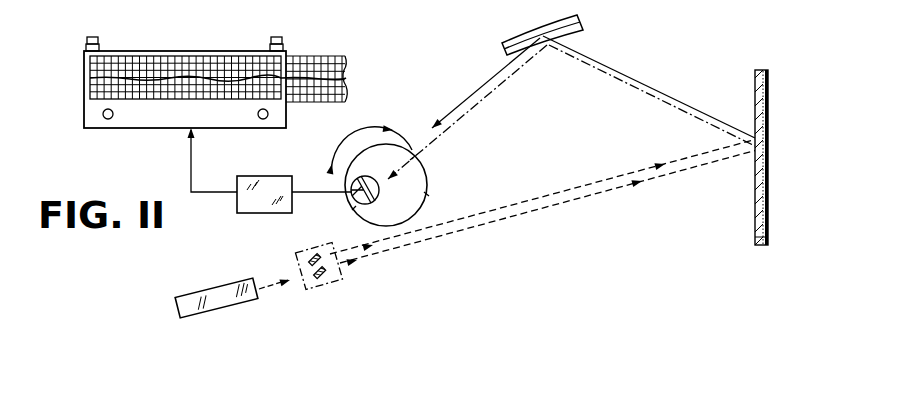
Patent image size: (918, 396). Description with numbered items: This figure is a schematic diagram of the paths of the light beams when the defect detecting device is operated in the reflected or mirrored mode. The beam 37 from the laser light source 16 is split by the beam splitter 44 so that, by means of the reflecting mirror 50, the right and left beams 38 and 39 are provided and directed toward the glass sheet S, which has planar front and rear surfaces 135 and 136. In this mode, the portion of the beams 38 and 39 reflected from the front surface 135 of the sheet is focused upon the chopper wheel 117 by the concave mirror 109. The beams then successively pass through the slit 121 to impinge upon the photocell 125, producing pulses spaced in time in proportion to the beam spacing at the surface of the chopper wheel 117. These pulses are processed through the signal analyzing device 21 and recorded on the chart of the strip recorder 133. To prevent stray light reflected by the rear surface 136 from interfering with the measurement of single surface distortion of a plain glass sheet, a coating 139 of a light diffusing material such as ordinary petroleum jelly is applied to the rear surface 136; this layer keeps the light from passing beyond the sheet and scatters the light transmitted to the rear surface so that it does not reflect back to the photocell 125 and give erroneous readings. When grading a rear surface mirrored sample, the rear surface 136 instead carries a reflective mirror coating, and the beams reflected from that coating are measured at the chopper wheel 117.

The laser light source 16 is at (172, 311).
The signal analyzing device 21 is at (247, 176).
The beam 37 is at (272, 290).
The right beam 38 is at (495, 221).
The left beam 39 is at (545, 196).
The beam splitter 44 is at (322, 277).
The reflecting mirror 50 is at (298, 257).
The concave mirror 109 is at (540, 32).
The chopper wheel 117 is at (421, 196).
The slit 121 is at (415, 157).
The photocell 125 is at (350, 188).
The strip recorder 133 is at (88, 103).
The front surface 135 is at (755, 95).
The rear surface 136 is at (757, 240).
The coating 139 is at (768, 118).
The glass sheet S is at (757, 192).